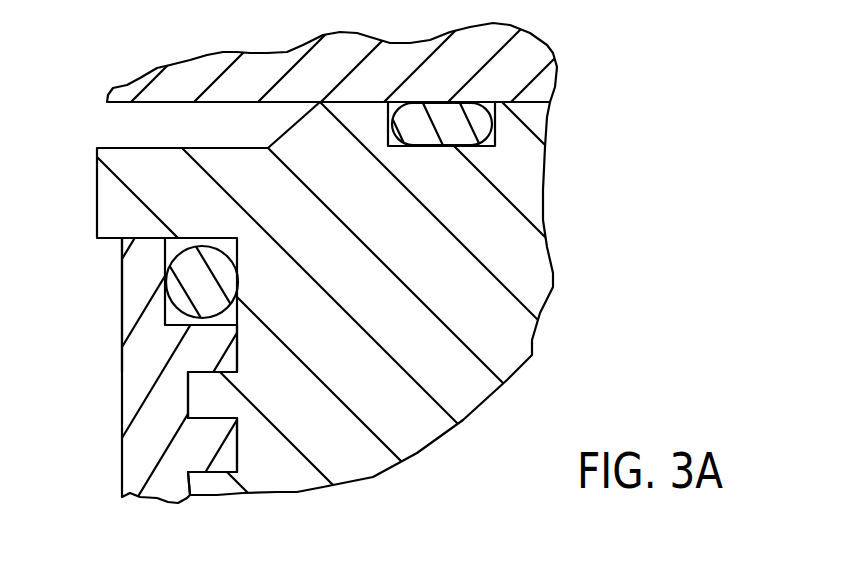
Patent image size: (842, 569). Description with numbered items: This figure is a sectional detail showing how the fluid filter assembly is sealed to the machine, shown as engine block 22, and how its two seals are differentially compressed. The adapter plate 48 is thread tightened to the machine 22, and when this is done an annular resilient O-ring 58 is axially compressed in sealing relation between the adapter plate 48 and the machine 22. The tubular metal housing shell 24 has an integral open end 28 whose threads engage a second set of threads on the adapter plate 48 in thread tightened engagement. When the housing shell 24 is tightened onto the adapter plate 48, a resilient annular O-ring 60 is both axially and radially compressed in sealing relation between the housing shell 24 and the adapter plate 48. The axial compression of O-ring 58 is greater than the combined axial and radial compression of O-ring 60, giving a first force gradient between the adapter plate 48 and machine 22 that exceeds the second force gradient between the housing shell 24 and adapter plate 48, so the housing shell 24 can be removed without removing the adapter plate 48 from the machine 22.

The engine block 22 is at (537, 50).
The O-ring 58 is at (478, 127).
The adapter plate 48 is at (395, 435).
The integral open end 28 is at (133, 247).
The housing shell 24 is at (135, 470).
The O-ring 60 is at (202, 283).